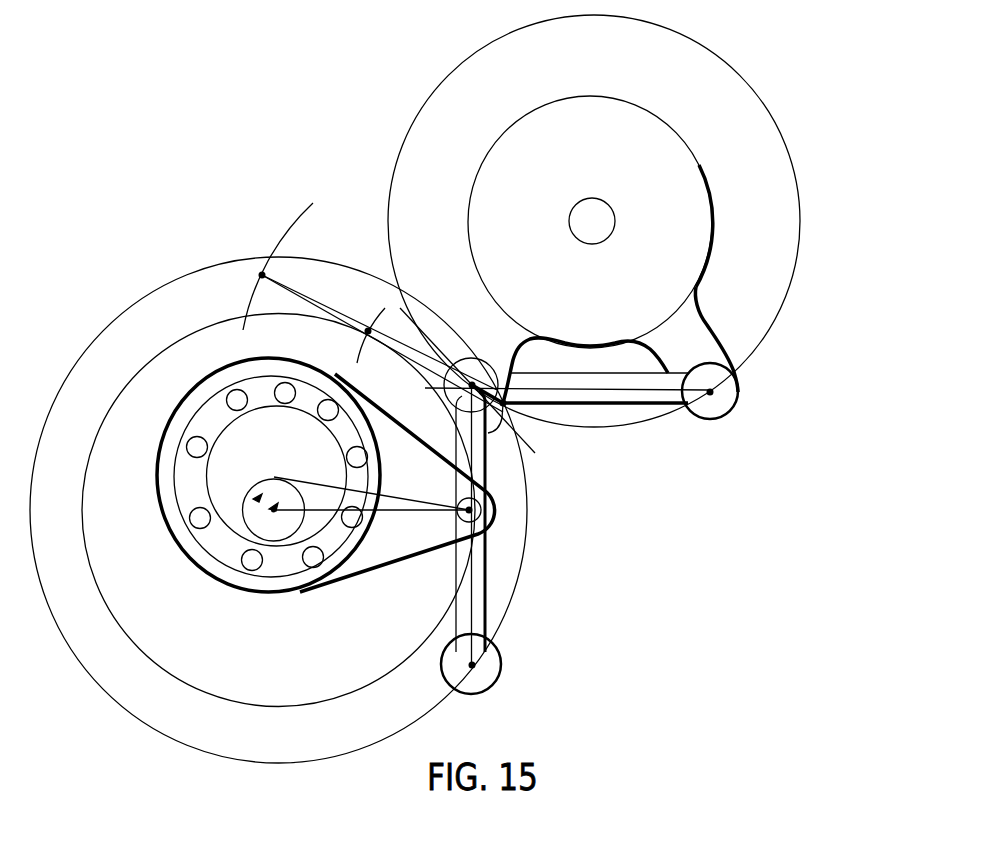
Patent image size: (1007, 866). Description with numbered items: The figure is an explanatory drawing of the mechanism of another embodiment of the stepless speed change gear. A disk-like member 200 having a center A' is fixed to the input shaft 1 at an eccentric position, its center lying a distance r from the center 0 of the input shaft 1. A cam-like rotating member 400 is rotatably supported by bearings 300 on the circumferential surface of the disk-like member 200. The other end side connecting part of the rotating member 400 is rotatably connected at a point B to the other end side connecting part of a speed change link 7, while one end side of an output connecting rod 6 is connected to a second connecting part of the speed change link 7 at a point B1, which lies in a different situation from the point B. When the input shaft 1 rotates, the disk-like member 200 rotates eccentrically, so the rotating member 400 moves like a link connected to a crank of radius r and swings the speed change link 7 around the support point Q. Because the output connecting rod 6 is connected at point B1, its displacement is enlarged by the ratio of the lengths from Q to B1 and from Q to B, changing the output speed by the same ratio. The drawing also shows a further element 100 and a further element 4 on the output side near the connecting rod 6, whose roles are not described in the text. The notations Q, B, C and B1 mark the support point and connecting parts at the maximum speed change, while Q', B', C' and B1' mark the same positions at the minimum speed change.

The bearings 300 is at (208, 410).
The input shaft 1 is at (262, 518).
The disk-like member 200 is at (308, 530).
The center of the input shaft 0 is at (328, 547).
The cam-like rotating member 400 is at (387, 550).
The cam 100 is at (699, 181).
The lever 4 is at (704, 342).
The output connecting rod 6 is at (641, 393).
The speed change link 7 is at (478, 596).
The connecting point B is at (508, 532).
The connecting point B1 is at (555, 369).
The connecting point B' is at (359, 290).
The connecting point B1' is at (365, 297).
The support point Q is at (490, 678).
The support point Q' is at (521, 356).
The connecting part C is at (710, 415).
The connecting part C' is at (525, 441).
The eccentric distance r is at (255, 498).
The center of the disk-like member A' is at (289, 470).